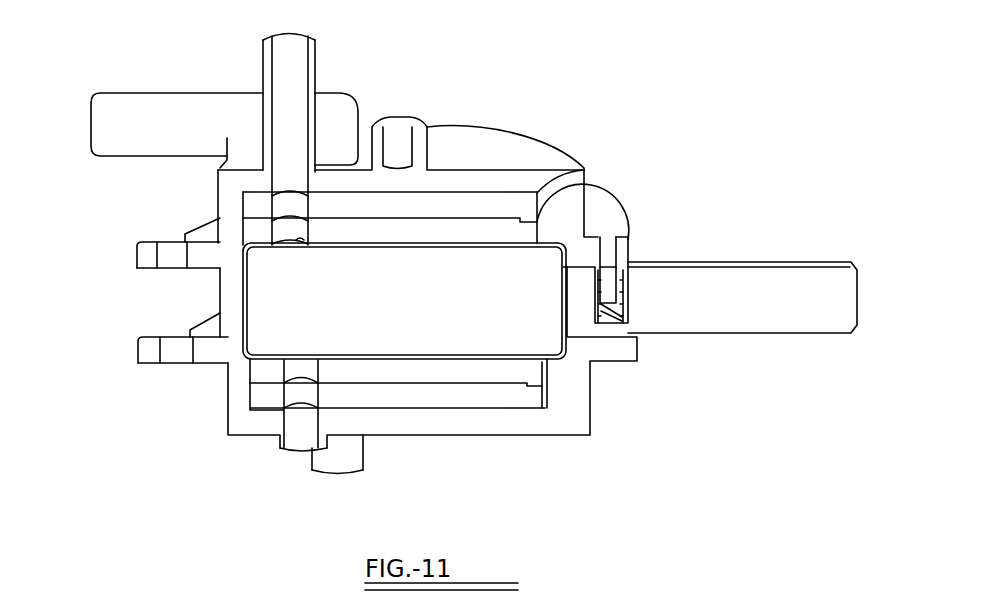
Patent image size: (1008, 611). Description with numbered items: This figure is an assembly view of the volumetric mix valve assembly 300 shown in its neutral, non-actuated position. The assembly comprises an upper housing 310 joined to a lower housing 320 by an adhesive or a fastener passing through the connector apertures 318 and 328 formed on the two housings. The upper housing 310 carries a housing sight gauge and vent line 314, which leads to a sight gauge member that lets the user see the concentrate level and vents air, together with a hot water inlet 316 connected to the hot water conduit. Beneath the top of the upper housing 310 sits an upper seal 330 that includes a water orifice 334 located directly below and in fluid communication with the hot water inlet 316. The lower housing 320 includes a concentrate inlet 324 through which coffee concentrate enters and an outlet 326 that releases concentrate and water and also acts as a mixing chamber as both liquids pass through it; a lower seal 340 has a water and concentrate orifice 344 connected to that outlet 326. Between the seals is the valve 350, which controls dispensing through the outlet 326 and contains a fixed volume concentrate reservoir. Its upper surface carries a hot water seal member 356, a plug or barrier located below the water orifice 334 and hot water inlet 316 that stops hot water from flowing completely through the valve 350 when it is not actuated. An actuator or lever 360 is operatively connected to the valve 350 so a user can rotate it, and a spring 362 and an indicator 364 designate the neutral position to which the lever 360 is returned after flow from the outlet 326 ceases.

The volumetric mix valve assembly 300 is at (605, 126).
The upper housing 310 is at (483, 125).
The second housing sight gauge and vent line 314 is at (337, 92).
The hot water inlet 316 is at (311, 42).
The connector aperture 318 is at (167, 242).
The lower housing 320 is at (485, 435).
The concentrate inlet 324 is at (361, 467).
The outlet 326 is at (295, 449).
The connector aperture 328 is at (170, 343).
The upper seal 330 is at (565, 176).
The water orifice 334 is at (297, 213).
The lower seal 340 is at (545, 373).
The water and concentrate orifice 344 is at (300, 380).
The valve 350 is at (272, 302).
The hot water seal member 356 is at (292, 243).
The actuator or lever 360 is at (762, 333).
The spring 362 is at (623, 308).
The indicator 364 is at (609, 268).